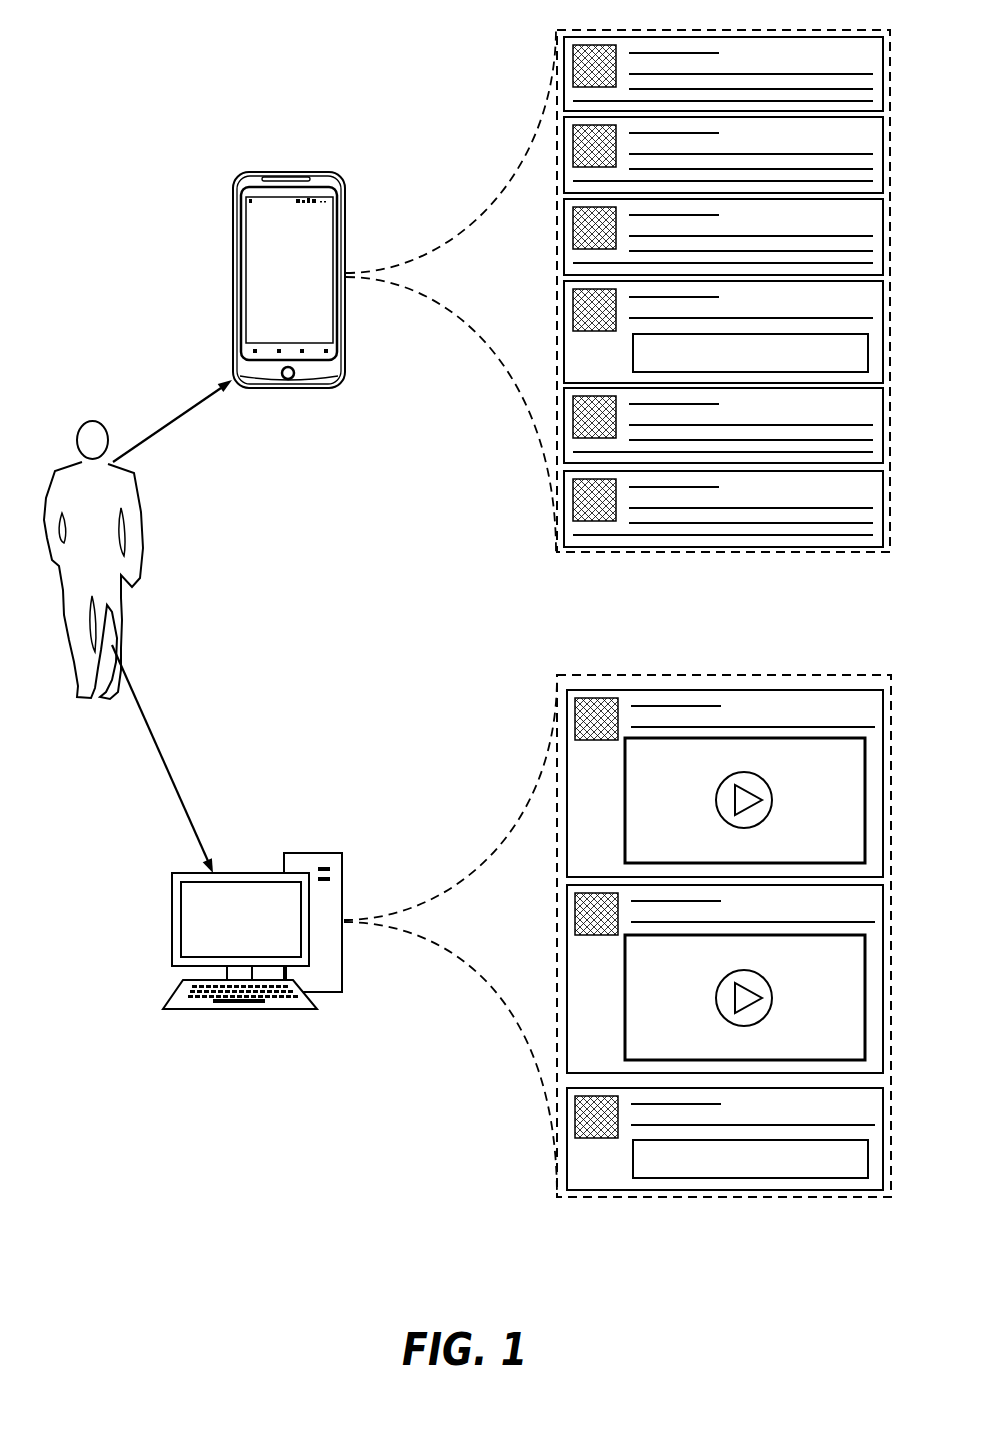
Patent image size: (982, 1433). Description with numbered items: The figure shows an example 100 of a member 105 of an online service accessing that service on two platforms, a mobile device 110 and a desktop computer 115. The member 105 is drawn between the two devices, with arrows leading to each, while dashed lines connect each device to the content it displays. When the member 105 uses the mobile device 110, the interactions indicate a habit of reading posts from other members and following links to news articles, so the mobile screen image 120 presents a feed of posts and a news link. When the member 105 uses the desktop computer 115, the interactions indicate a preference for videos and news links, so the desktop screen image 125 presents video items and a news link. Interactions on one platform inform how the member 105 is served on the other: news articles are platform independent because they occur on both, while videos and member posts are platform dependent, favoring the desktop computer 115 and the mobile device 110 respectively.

The example 100 is at (120, 55).
The member 105 is at (136, 492).
The mobile device 110 is at (313, 172).
The desktop computer 115 is at (316, 853).
The mobile screen image 120 is at (722, 30).
The desktop screen image 125 is at (740, 675).